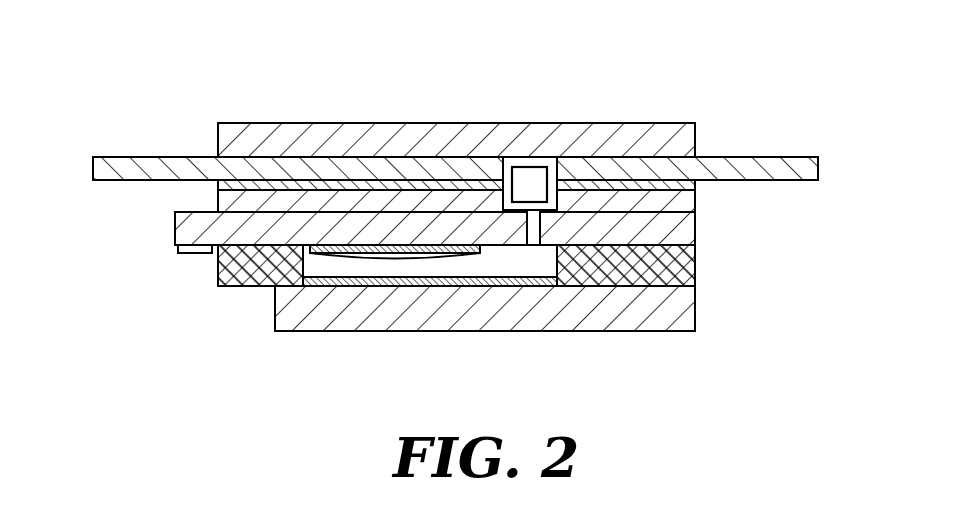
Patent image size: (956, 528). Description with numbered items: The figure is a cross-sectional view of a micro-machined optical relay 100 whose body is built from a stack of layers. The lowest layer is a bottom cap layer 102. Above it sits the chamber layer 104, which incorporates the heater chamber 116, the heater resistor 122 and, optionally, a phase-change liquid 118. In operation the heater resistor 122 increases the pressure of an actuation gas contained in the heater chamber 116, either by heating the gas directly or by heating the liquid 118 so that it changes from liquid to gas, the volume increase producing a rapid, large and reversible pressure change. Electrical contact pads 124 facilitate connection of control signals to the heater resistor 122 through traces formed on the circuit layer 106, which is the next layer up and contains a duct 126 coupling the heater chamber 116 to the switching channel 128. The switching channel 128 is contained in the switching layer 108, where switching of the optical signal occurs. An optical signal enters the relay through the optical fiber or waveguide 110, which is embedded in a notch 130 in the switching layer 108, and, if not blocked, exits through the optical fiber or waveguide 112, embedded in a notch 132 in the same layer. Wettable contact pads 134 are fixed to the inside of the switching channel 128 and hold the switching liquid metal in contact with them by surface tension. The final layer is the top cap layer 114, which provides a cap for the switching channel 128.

The optical relay 100 is at (172, 49).
The bottom cap layer 102 is at (675, 332).
The chamber layer 104 is at (697, 268).
The circuit layer 106 is at (175, 228).
The switching layer 108 is at (693, 195).
The optical fiber or waveguide 110 is at (127, 157).
The optical fiber or waveguide 112 is at (777, 155).
The top cap layer 114 is at (293, 123).
The heater chamber 116 is at (518, 262).
The phase-change liquid 118 is at (402, 258).
The heater resistor 122 is at (370, 255).
The electrical contact pads 124 is at (197, 253).
The duct 126 is at (540, 230).
The switching channel 128 is at (528, 178).
The notch 130 is at (218, 187).
The notch 132 is at (695, 183).
The wettable contact pads 134 is at (510, 162).